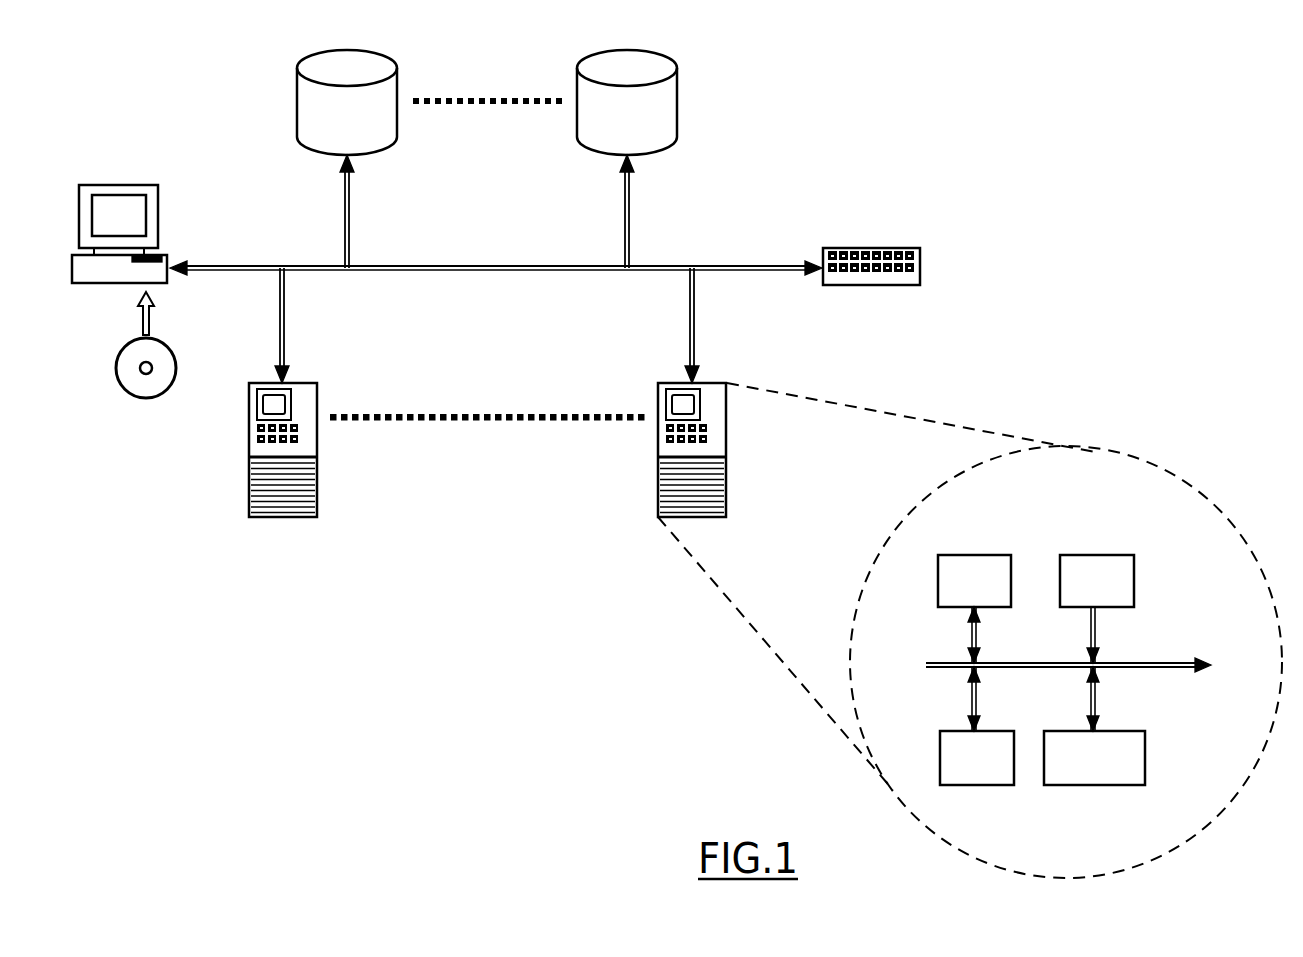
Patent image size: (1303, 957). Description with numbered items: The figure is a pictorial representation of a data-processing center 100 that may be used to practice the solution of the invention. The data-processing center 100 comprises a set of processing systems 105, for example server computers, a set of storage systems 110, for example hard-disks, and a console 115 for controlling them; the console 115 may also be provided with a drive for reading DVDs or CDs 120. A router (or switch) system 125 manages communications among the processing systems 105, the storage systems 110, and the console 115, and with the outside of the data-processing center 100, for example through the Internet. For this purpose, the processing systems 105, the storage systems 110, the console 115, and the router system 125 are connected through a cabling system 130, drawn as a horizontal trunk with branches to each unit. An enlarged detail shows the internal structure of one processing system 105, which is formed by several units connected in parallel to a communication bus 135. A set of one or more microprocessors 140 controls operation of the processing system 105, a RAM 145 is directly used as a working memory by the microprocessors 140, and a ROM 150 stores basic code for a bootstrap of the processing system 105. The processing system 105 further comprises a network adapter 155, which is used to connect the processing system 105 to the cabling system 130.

The data-processing center 100 is at (1112, 109).
The processing system 105 is at (765, 630).
The storage system 110 is at (457, 122).
The console 115 is at (124, 214).
The DVDs or CDs 120 is at (124, 368).
The router system 125 is at (894, 245).
The cabling system 130 is at (496, 269).
The communication bus 135 is at (1092, 682).
The microprocessors 140 is at (1000, 593).
The RAM 145 is at (996, 744).
The ROM 150 is at (1121, 593).
The network adapter 155 is at (1111, 744).